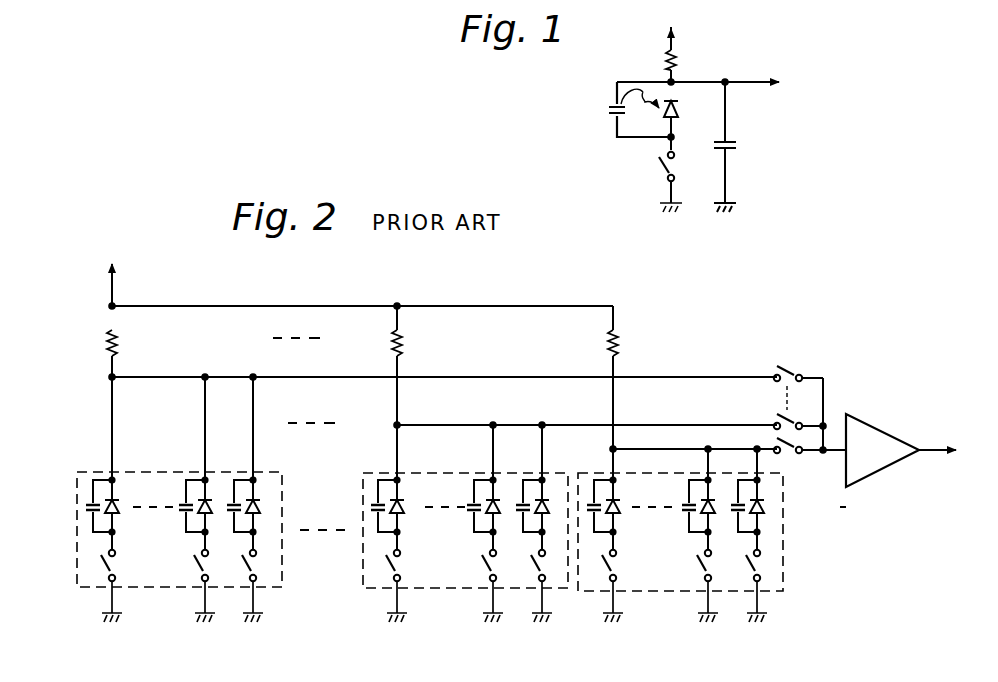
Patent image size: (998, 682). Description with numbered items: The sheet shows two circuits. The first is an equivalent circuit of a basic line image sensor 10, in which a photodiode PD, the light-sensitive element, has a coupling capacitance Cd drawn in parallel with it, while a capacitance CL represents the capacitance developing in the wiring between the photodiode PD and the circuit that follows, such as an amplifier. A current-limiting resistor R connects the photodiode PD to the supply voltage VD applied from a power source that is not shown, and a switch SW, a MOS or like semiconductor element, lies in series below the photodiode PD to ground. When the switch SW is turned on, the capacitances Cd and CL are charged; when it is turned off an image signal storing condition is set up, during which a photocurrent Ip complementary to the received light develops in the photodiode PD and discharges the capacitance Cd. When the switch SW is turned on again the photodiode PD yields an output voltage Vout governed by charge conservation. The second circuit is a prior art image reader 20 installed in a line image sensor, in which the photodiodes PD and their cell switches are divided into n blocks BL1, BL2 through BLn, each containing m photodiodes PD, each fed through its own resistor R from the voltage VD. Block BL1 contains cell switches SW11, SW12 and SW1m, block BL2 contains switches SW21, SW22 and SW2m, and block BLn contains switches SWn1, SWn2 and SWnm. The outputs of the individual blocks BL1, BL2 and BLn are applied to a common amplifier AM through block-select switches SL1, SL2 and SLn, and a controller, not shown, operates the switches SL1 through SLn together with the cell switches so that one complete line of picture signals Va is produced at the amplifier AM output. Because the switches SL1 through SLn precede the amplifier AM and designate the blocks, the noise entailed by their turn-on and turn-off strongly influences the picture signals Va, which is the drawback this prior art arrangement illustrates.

In FIG. 1, the line image sensor 10 is at (803, 54).
In FIG. 2, the image reader 20 is at (752, 330).
In FIG. 1, the resistor R is at (678, 60).
In FIG. 2, the resistor R is at (634, 339).
In FIG. 1, the photodiode PD is at (680, 110).
In FIG. 2, the photodiode PD is at (116, 516).
In FIG. 1, the capacitance Cd is at (603, 111).
In FIG. 1, the capacitance CL is at (740, 146).
In FIG. 1, the switch SW is at (656, 166).
In FIG. 1, the photocurrent Ip is at (640, 112).
In FIG. 1, the voltage VD is at (668, 25).
In FIG. 2, the voltage VD is at (116, 270).
In FIG. 1, the output voltage Vout is at (774, 88).
In FIG. 2, the picture signals Va is at (955, 450).
In FIG. 2, the amplifier AM is at (873, 419).
In FIG. 2, the switch SLn is at (789, 363).
In FIG. 2, the switch SL2 is at (779, 414).
In FIG. 2, the switch SL1 is at (787, 453).
In FIG. 2, the block BLn is at (163, 590).
In FIG. 2, the block BL2 is at (447, 591).
In FIG. 2, the block BL1 is at (663, 593).
In FIG. 2, the switch SWnm is at (107, 568).
In FIG. 2, the switch SWn2 is at (199, 565).
In FIG. 2, the switch SWn1 is at (249, 570).
In FIG. 2, the switch SW2m is at (392, 569).
In FIG. 2, the switch SW22 is at (486, 565).
In FIG. 2, the switch SW21 is at (536, 570).
In FIG. 2, the switch SW1m is at (608, 569).
In FIG. 2, the switch SW12 is at (700, 565).
In FIG. 2, the switch SW11 is at (752, 570).